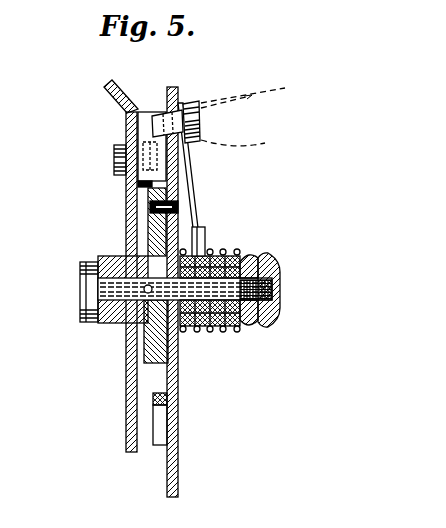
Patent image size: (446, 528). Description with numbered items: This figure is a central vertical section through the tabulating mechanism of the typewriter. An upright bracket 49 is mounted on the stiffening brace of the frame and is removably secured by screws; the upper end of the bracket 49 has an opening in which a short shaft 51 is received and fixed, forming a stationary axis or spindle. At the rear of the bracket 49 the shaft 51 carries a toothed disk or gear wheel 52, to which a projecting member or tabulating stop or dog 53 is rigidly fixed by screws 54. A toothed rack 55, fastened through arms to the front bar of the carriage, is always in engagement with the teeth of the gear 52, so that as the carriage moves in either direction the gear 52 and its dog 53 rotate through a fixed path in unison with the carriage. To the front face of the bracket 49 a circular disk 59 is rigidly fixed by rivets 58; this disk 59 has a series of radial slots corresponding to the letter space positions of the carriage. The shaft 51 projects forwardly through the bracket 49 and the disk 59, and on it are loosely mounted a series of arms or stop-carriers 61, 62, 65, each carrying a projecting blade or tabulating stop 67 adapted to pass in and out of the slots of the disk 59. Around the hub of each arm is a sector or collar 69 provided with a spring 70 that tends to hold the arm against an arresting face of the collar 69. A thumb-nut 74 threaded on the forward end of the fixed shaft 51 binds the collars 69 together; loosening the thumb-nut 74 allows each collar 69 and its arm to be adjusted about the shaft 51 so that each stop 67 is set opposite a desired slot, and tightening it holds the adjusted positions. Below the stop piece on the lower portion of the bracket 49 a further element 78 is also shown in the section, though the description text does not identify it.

The upright bracket 49 is at (152, 340).
The short shaft 51 is at (115, 287).
The toothed disk or gear wheel 52 is at (126, 210).
The tabulating stop or dog 53 is at (148, 114).
The screws 54 is at (114, 158).
The toothed rack 55 is at (106, 88).
The rivets 58 is at (178, 190).
The circular disk 59 is at (170, 390).
The arm or stop-carrier 61 is at (218, 156).
The arm or stop-carrier 62 is at (210, 252).
The arm or stop-carrier 65 is at (246, 256).
The tabulating stop 67 is at (160, 116).
The sector or collar 69 is at (201, 330).
The spring 70 is at (235, 330).
The thumb-nut 74 is at (278, 272).
The slot 78 is at (160, 440).